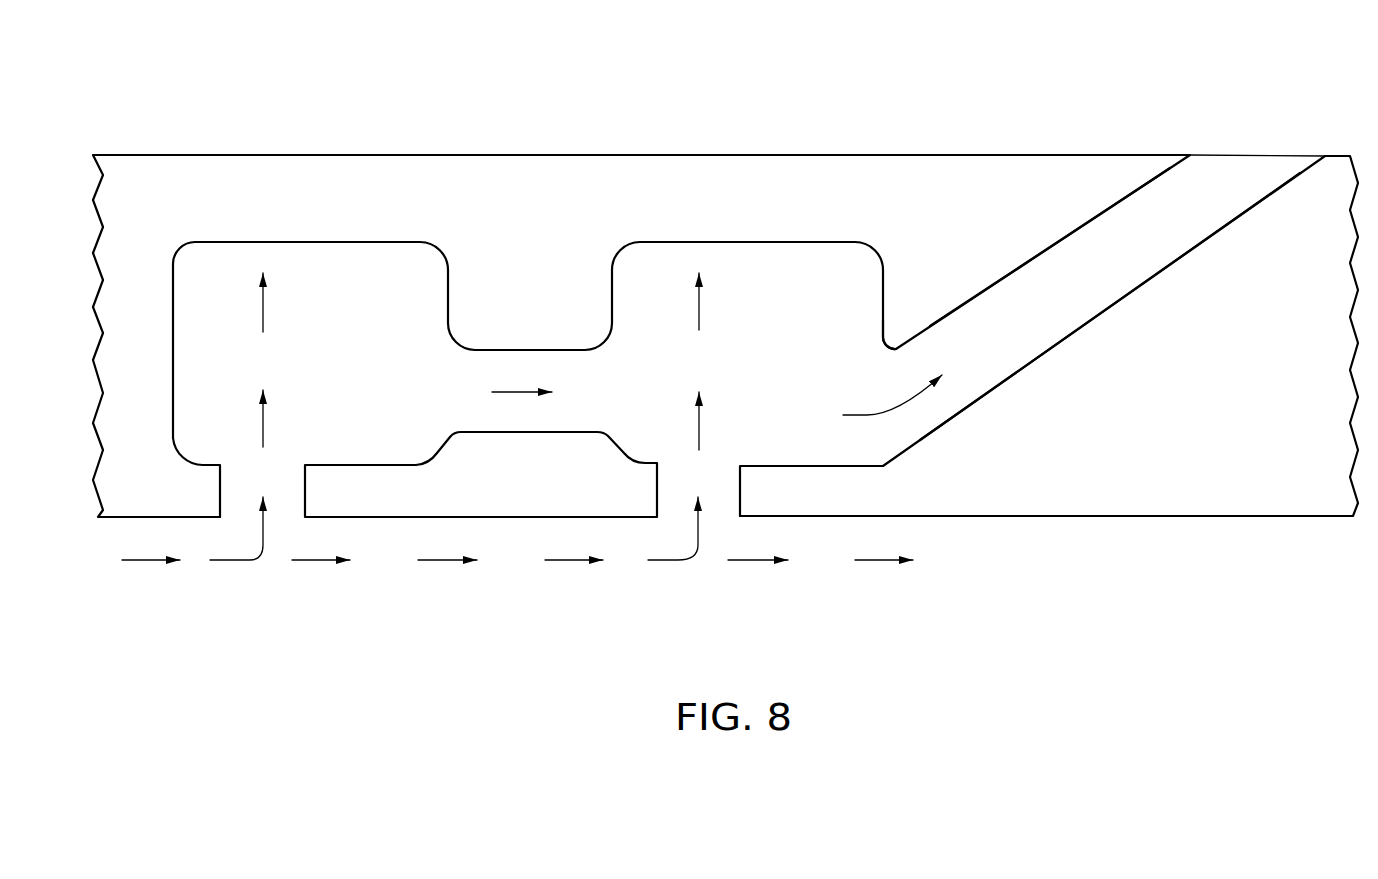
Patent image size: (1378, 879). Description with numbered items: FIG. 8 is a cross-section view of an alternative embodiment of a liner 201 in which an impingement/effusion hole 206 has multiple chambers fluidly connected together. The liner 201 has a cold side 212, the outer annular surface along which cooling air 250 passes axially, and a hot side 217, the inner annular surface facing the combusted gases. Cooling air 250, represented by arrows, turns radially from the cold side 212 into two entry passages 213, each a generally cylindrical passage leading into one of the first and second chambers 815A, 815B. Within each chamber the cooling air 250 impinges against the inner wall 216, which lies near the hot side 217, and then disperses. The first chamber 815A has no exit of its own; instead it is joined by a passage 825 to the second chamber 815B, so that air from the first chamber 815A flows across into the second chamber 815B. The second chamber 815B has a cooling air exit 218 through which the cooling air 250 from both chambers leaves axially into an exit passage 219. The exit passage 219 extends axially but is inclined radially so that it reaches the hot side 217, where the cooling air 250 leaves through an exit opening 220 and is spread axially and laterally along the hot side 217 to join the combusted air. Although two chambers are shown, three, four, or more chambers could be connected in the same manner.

The liner 201 is at (157, 424).
The impingement/effusion hole 206 is at (273, 562).
The cold side 212 is at (167, 517).
The entry passage 213 is at (250, 472).
The inner wall 216 is at (300, 246).
The hot side 217 is at (333, 155).
The cooling air exit 218 is at (895, 380).
The exit passage 219 is at (1090, 253).
The exit opening 220 is at (1257, 138).
The cooling air 250 is at (265, 310).
The first chamber 815A is at (340, 370).
The second chamber 815B is at (775, 368).
The passage 825 is at (535, 367).